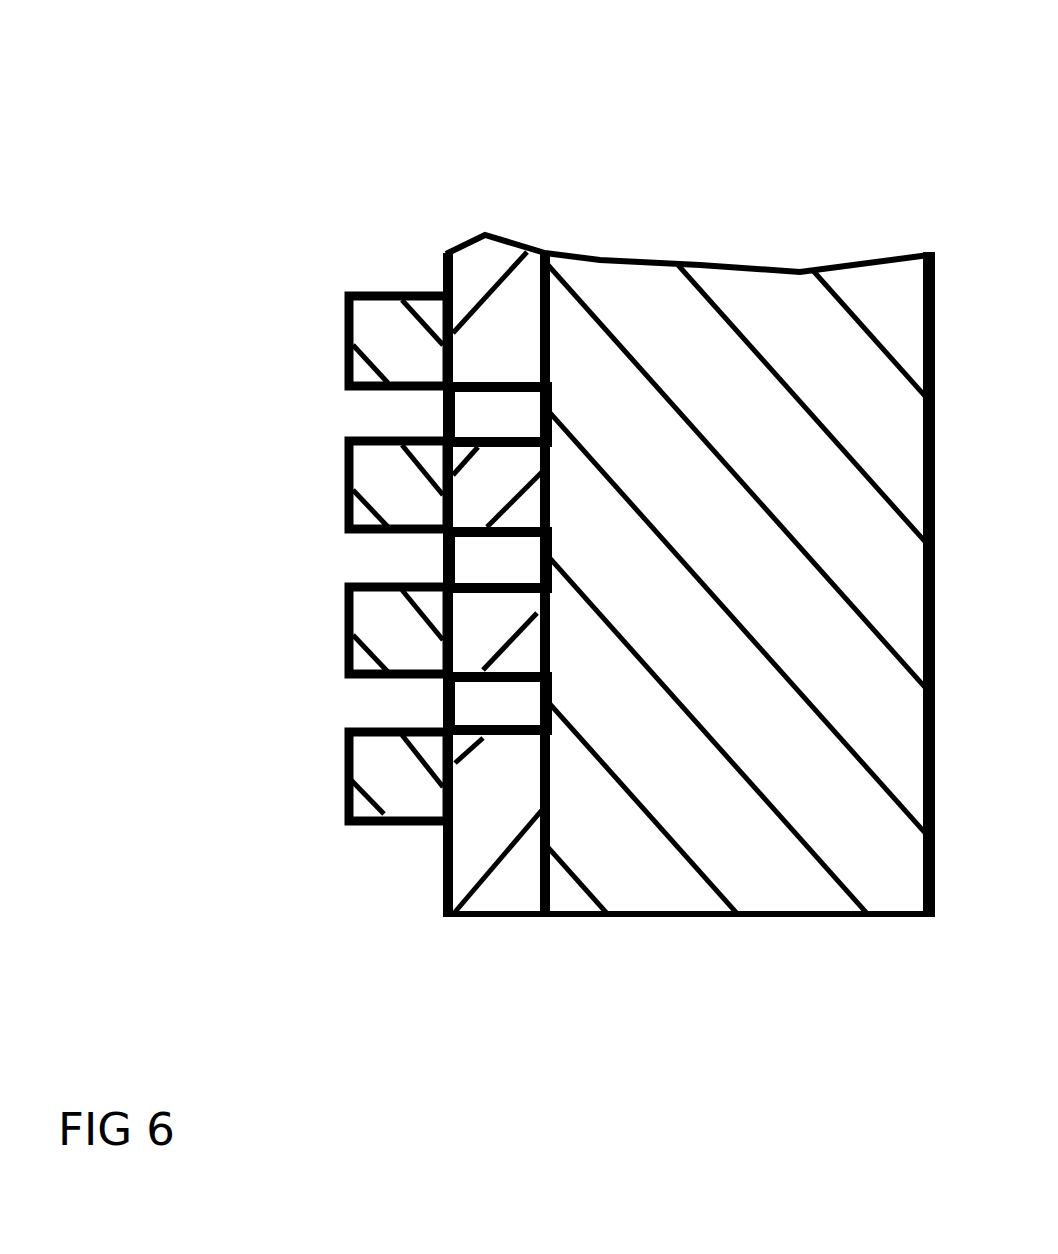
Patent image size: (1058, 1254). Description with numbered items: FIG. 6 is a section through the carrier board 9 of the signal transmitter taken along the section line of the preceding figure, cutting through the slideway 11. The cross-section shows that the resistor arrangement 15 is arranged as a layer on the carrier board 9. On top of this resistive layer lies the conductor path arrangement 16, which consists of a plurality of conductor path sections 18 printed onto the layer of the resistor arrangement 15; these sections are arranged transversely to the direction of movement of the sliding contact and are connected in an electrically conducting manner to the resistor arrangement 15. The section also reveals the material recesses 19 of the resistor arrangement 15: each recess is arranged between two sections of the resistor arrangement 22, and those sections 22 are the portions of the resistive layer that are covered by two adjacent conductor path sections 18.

The carrier board 9 is at (803, 337).
The slideway 11 is at (283, 277).
The resistor arrangement 15 is at (510, 327).
The conductor path arrangement 16 is at (415, 212).
The conductor path sections 18 is at (390, 490).
The material recesses 19 is at (528, 702).
The sections of the resistor arrangement 22 is at (495, 363).